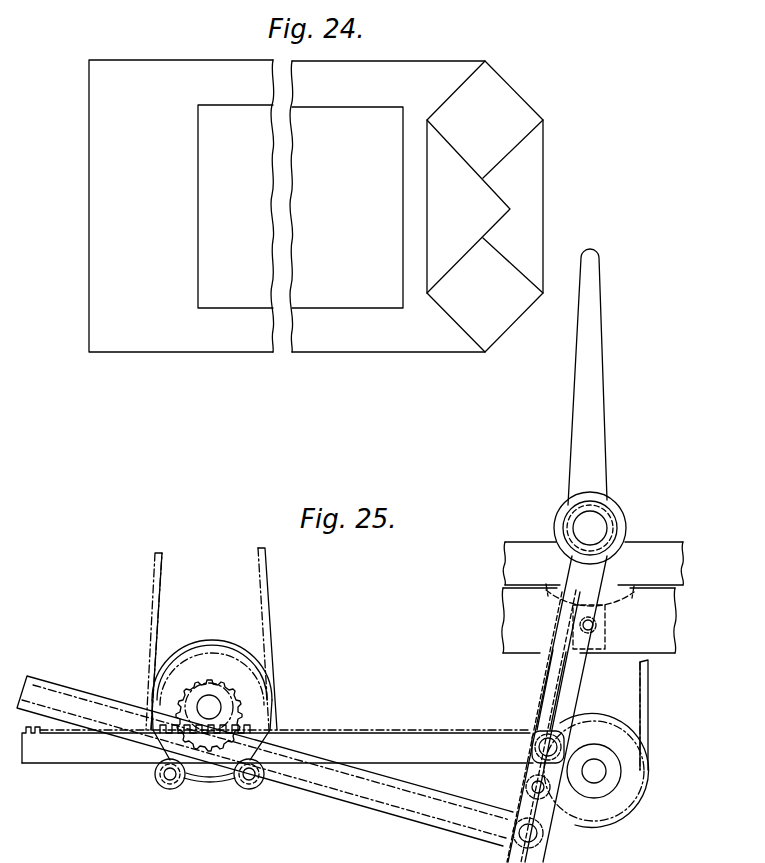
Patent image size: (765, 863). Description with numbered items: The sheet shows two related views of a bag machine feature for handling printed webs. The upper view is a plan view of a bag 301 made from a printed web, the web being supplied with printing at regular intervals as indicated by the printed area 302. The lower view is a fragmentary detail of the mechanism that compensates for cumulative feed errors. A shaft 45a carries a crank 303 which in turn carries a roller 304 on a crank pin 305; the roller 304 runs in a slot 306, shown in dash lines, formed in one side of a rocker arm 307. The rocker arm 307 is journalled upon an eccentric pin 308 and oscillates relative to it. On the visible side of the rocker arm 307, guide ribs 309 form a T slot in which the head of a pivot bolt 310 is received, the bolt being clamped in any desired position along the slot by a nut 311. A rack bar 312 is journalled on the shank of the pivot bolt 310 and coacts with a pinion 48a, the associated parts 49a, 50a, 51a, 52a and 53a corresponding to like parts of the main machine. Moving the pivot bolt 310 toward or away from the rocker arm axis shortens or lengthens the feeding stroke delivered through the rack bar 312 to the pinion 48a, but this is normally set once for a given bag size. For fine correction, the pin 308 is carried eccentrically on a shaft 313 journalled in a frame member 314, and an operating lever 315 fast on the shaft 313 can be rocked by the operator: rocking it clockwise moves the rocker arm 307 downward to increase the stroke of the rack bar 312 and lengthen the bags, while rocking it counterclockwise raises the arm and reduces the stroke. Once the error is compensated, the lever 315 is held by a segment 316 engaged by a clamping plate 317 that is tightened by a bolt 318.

In FIG. 24, the bag 301 is at (188, 340).
In FIG. 24, the printed area 302 is at (198, 185).
In FIG. 25, the crank 303 is at (592, 797).
In FIG. 25, the roller 304 is at (532, 797).
In FIG. 25, the crank pin 305 is at (545, 822).
In FIG. 25, the slot 306 is at (550, 688).
In FIG. 25, the rocker arm 307 is at (561, 626).
In FIG. 25, the eccentric pin 308 is at (612, 516).
In FIG. 25, the guide ribs 309 is at (547, 656).
In FIG. 25, the pivot bolt 310 is at (539, 748).
In FIG. 25, the nut 311 is at (560, 730).
In FIG. 25, the rack bar 312 is at (362, 732).
In FIG. 25, the shaft 313 is at (570, 518).
In FIG. 25, the frame member 314 is at (660, 548).
In FIG. 25, the operating lever 315 is at (598, 412).
In FIG. 25, the segment 316 is at (636, 609).
In FIG. 25, the clamping plate 317 is at (605, 645).
In FIG. 25, the bolt 318 is at (598, 626).
In FIG. 25, the shaft 45a is at (600, 771).
In FIG. 25, the pinion 48a is at (237, 705).
In FIG. 25, the part corresponding to part 49 49a is at (207, 703).
In FIG. 25, the part corresponding to part 50 50a is at (172, 781).
In FIG. 25, the part corresponding to part 51 51a is at (205, 777).
In FIG. 25, the part corresponding to part 52 52a is at (201, 638).
In FIG. 25, the part corresponding to part 53 53a is at (151, 585).